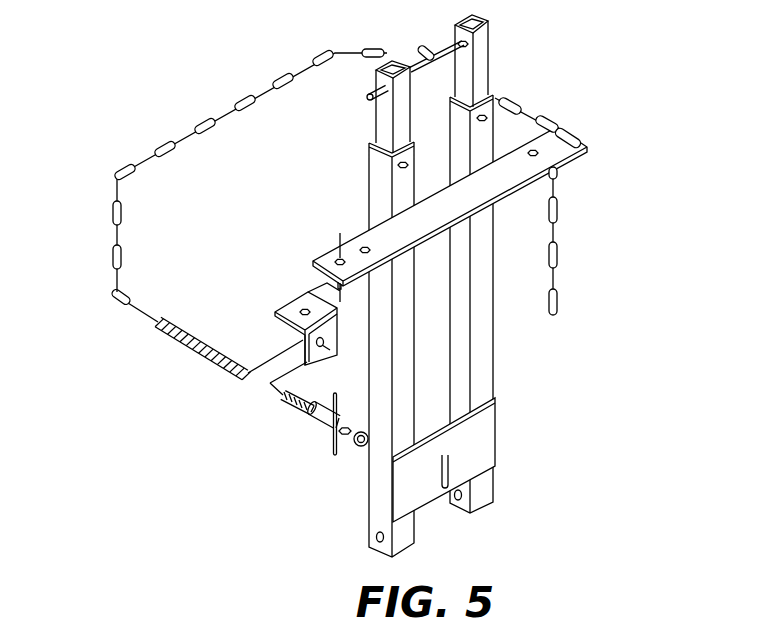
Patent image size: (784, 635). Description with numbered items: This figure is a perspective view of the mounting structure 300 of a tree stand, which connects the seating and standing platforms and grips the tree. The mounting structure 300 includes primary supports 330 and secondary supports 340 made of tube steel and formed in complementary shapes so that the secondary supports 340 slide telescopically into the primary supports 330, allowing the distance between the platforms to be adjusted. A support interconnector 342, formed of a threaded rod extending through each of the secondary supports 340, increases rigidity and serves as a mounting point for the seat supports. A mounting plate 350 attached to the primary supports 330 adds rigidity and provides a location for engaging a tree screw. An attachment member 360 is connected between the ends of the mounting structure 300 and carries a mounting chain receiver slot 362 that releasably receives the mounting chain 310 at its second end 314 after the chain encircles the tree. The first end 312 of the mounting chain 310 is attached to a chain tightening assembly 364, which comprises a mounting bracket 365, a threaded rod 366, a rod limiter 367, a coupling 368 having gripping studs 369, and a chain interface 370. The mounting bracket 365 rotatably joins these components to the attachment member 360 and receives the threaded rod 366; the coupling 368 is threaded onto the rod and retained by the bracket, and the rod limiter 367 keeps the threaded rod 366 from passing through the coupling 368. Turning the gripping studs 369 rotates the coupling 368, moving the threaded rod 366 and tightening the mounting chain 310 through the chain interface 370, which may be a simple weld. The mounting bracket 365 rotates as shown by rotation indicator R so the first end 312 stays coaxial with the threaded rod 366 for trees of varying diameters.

The mounting structure 300 is at (605, 379).
The mounting chain 310 is at (122, 218).
The first end 312 is at (132, 312).
The second end 314 is at (561, 305).
The primary support 330 is at (415, 349).
The secondary support 340 is at (411, 87).
The support interconnector 342 is at (409, 68).
The mounting plate 350 is at (470, 393).
The attachment member 360 is at (578, 140).
The mounting chain receiver slot 362 is at (568, 148).
The chain tightening assembly 364 is at (200, 385).
The mounting bracket 365 is at (268, 312).
The threaded rod 366 is at (190, 350).
The rod limiter 367 is at (362, 446).
The coupling 368 is at (310, 418).
The gripping studs 369 is at (334, 448).
The chain interface 370 is at (155, 325).
The rotation indicator R is at (330, 228).